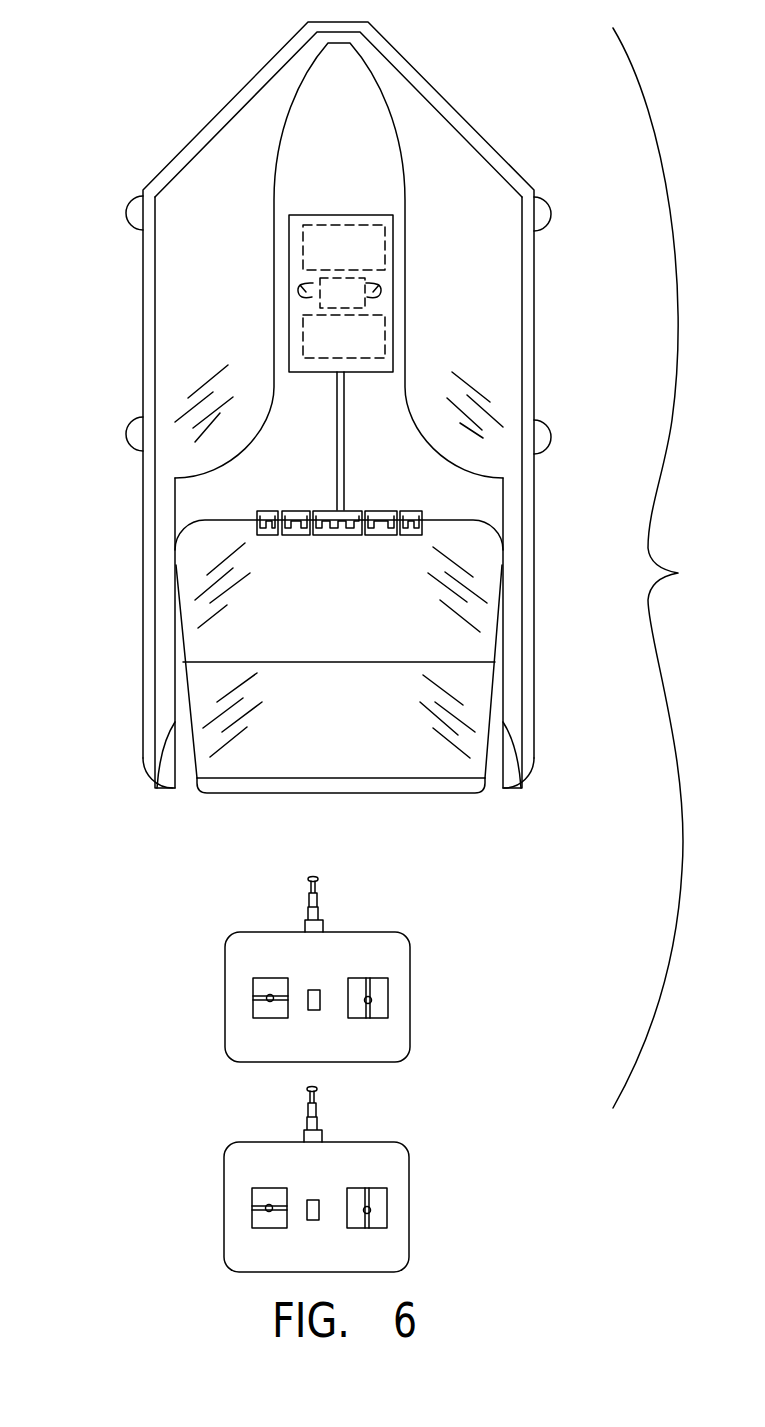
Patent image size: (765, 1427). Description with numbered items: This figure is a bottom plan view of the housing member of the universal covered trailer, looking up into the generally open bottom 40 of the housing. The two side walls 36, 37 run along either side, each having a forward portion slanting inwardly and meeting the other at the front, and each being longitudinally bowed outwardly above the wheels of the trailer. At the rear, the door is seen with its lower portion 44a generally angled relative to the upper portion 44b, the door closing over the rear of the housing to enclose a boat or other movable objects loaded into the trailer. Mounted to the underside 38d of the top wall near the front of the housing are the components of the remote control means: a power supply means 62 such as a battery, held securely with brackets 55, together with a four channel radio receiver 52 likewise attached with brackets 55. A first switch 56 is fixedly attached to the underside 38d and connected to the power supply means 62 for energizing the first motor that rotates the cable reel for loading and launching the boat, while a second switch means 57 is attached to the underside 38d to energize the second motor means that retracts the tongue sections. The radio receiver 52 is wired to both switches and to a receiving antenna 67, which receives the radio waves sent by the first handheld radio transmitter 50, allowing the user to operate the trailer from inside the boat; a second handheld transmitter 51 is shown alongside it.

The side wall 36 is at (532, 381).
The side wall 37 is at (145, 373).
The underside of the top wall 38d is at (338, 110).
The open bottom 40 is at (233, 192).
The lower portion of the door 44a is at (415, 775).
The upper portion of the door 44b is at (473, 638).
The first handheld radio transmitter 50 is at (392, 953).
The second remote control transmitter 51 is at (390, 1163).
The four channel radio receiver 52 is at (383, 243).
The brackets 55 is at (360, 214).
The first switch 56 is at (386, 296).
The second switch means 57 is at (302, 296).
The power supply means 62 is at (338, 283).
The receiving antenna 67 is at (343, 492).